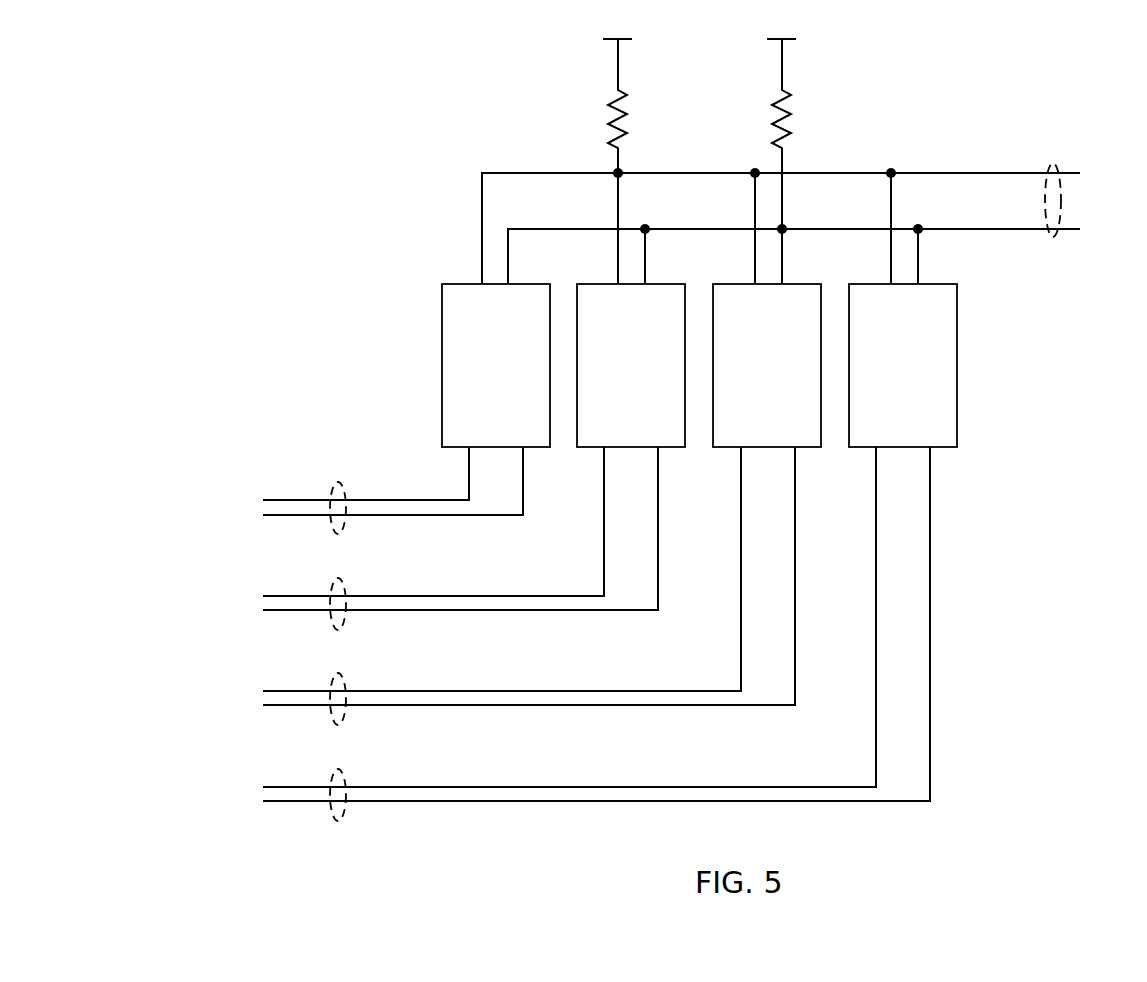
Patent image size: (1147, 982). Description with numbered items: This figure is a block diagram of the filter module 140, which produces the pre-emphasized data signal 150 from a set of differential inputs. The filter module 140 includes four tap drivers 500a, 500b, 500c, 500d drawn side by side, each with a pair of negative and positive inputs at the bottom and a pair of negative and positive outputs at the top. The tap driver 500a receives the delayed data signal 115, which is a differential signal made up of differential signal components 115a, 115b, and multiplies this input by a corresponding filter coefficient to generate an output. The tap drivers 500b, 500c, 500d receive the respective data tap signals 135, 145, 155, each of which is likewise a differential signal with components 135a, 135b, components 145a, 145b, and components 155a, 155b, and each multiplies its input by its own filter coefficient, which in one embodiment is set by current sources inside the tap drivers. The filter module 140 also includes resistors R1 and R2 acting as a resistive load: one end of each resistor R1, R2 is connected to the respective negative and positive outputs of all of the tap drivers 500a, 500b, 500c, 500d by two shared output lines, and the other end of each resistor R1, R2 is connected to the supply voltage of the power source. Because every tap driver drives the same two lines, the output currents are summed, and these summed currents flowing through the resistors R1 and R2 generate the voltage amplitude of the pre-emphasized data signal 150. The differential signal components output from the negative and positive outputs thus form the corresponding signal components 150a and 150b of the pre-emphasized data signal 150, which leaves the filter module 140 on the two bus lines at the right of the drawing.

The filter module 140 is at (317, 86).
The pre-emphasized data signal 150 is at (1053, 163).
The signal component of pre-emphasized data signal 150a is at (945, 173).
The signal component of pre-emphasized data signal 150b is at (945, 229).
The resistor R1 is at (604, 149).
The resistor R2 is at (768, 149).
The tap driver 500a is at (496, 365).
The tap driver 500b is at (631, 365).
The tap driver 500c is at (767, 365).
The tap driver 500d is at (903, 365).
The delayed data signal 115 is at (340, 483).
The differential signal component of delayed data signal 115a is at (427, 500).
The differential signal component of delayed data signal 115b is at (427, 515).
The data tap signal 135 is at (340, 579).
The differential signal component of data tap signal 135a is at (427, 596).
The differential signal component of data tap signal 135b is at (427, 610).
The data tap signal 145 is at (340, 674).
The differential signal component of data tap signal 145a is at (427, 691).
The differential signal component of data tap signal 145b is at (427, 705).
The data tap signal 155 is at (340, 770).
The differential signal component of data tap signal 155a is at (427, 787).
The differential signal component of data tap signal 155b is at (427, 801).